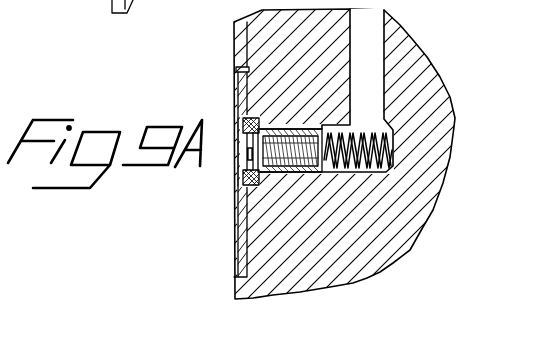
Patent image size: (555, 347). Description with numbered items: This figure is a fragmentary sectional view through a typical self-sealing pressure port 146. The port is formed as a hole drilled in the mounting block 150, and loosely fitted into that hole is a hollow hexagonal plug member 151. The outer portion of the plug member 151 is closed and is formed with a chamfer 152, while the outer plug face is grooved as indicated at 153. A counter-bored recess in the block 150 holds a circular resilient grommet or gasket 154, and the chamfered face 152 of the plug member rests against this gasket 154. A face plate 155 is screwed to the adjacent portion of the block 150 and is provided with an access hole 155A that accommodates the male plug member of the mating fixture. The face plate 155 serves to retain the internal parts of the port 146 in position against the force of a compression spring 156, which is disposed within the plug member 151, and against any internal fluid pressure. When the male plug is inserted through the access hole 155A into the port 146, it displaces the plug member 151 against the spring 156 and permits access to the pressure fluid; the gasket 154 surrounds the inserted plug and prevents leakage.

The self-sealing pressure port 146 is at (228, 171).
The mounting block 150 is at (445, 115).
The hollow hexagonal plug member 151 is at (327, 125).
The chamfer 152 is at (243, 133).
The groove 153 is at (254, 164).
The resilient grommet or gasket 154 is at (232, 102).
The face plate 155 is at (232, 80).
The access hole 155A is at (243, 155).
The compression spring 156 is at (365, 131).